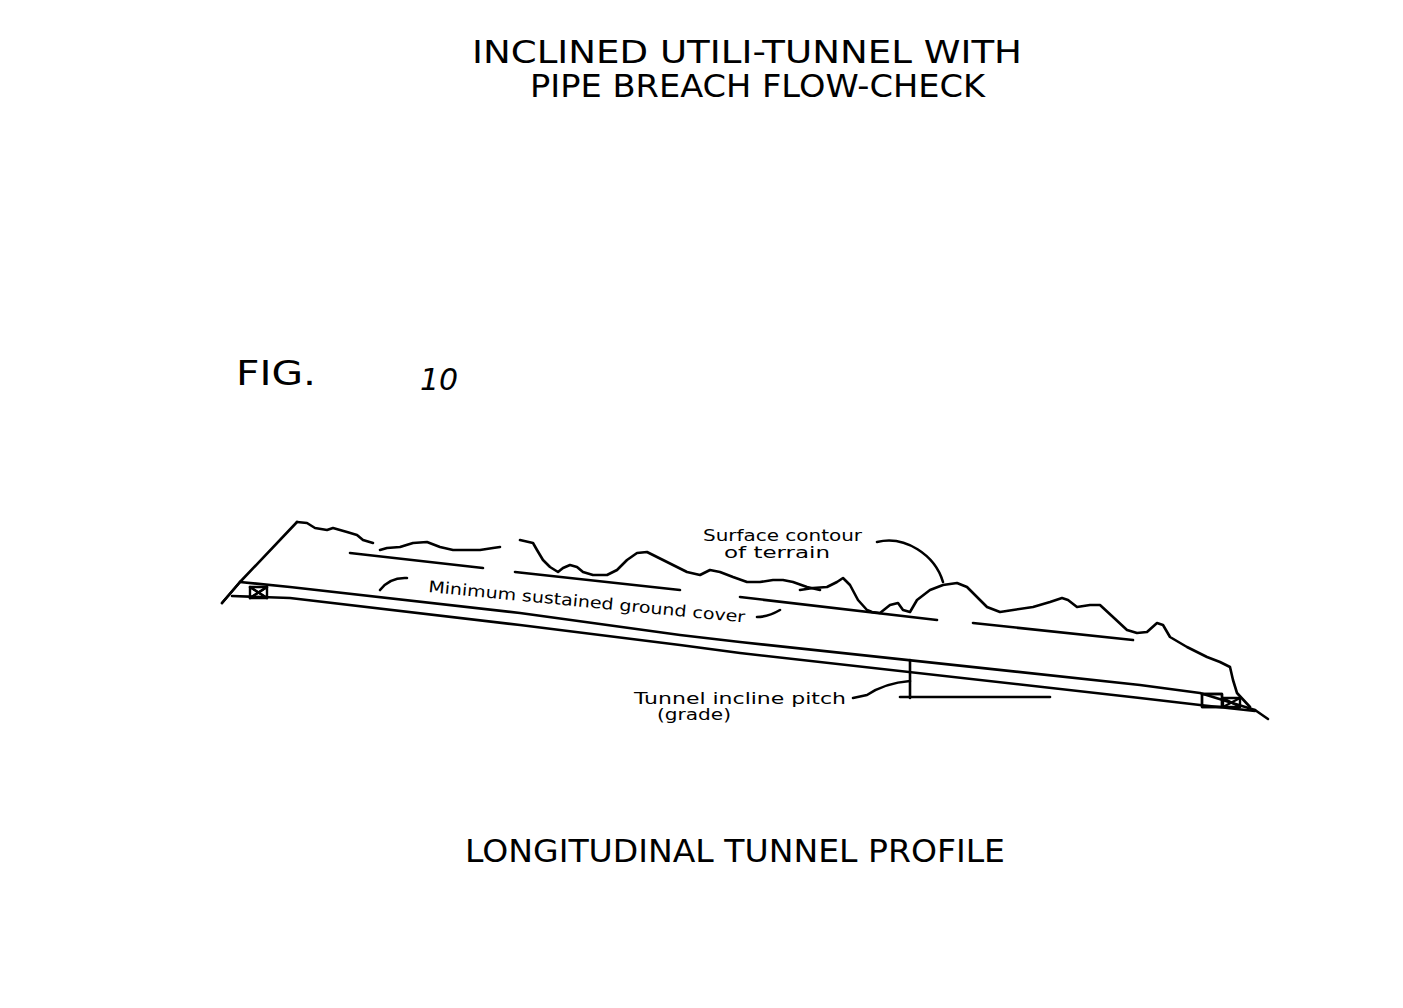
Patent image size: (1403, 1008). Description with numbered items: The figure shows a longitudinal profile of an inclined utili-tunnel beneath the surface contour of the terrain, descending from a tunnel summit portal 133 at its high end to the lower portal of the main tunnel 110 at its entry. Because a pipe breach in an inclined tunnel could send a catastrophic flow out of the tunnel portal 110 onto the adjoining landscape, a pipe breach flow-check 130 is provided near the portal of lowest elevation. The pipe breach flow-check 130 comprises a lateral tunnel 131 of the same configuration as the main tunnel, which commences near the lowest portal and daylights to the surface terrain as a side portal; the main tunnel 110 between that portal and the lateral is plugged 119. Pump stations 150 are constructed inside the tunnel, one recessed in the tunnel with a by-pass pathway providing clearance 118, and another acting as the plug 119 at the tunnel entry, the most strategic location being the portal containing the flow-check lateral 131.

The tunnel summit portal 133 is at (235, 570).
The pump station 150 is at (736, 616).
The clearance 118 is at (253, 606).
The plug 119 is at (1228, 702).
The main tunnel 110 is at (1133, 634).
The lateral tunnel 131 is at (1004, 702).
The pipe breach flow-check 130 is at (1207, 715).